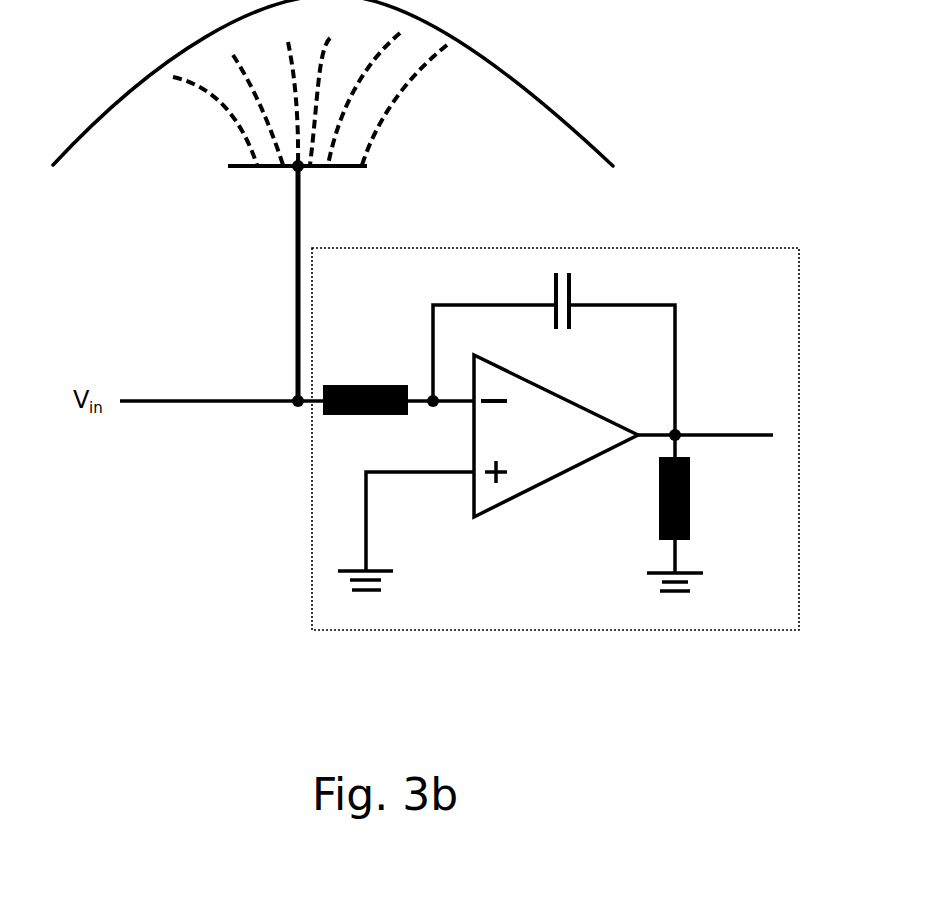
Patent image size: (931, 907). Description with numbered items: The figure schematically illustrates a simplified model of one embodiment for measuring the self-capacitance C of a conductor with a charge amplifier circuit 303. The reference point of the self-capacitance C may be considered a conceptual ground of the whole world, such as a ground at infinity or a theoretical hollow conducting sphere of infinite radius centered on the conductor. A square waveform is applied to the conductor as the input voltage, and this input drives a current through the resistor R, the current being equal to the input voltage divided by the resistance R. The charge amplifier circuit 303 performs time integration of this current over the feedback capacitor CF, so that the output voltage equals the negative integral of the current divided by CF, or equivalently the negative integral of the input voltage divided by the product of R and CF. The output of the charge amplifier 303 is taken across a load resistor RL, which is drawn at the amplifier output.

The charge amplifier circuit 303 is at (687, 248).
The self-capacitance C is at (307, 217).
The input resistor R is at (398, 382).
The feedback capacitor CF is at (554, 352).
The load resistor RL is at (688, 513).